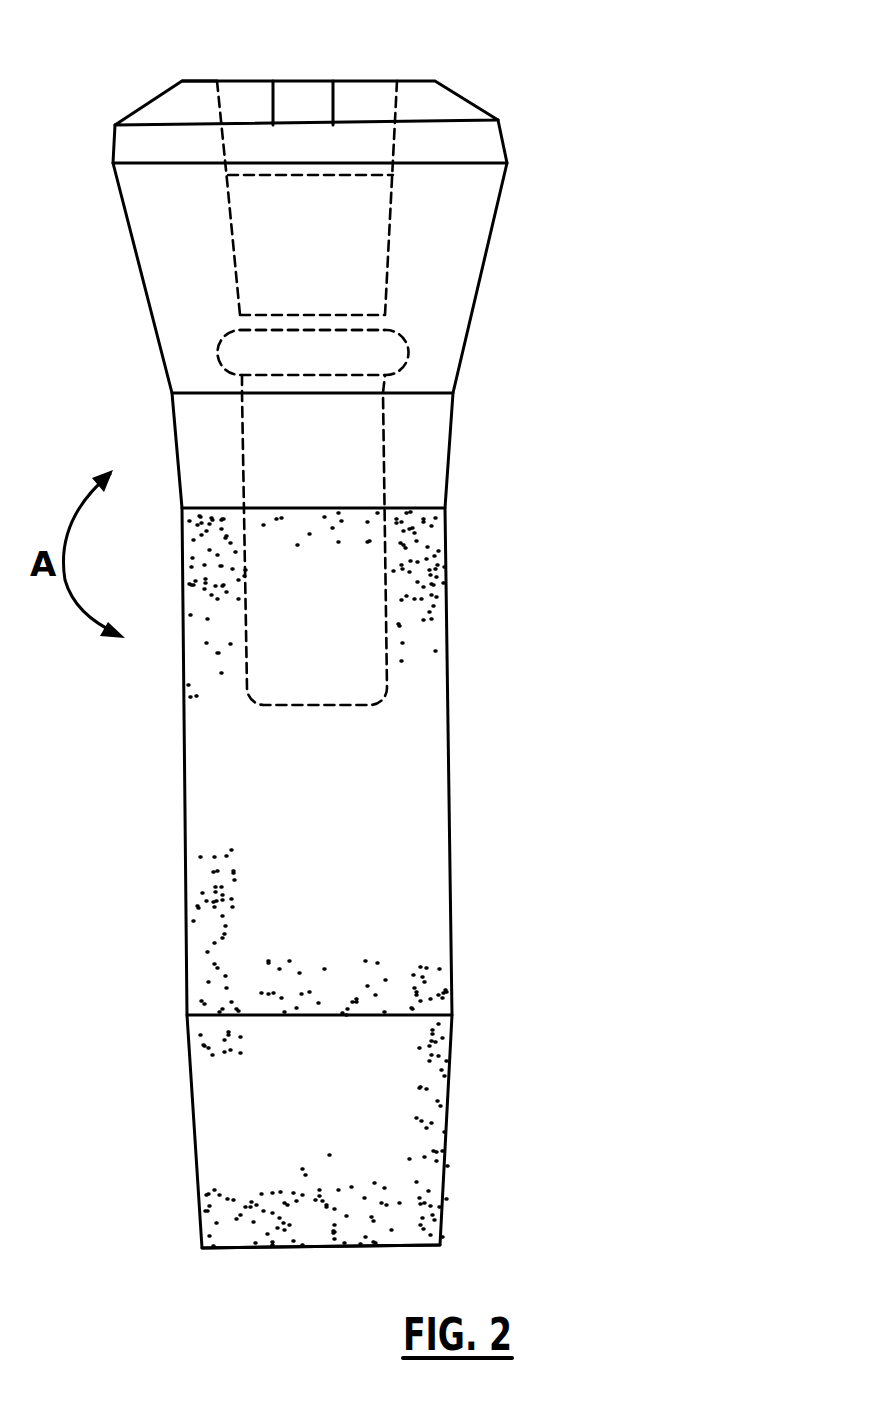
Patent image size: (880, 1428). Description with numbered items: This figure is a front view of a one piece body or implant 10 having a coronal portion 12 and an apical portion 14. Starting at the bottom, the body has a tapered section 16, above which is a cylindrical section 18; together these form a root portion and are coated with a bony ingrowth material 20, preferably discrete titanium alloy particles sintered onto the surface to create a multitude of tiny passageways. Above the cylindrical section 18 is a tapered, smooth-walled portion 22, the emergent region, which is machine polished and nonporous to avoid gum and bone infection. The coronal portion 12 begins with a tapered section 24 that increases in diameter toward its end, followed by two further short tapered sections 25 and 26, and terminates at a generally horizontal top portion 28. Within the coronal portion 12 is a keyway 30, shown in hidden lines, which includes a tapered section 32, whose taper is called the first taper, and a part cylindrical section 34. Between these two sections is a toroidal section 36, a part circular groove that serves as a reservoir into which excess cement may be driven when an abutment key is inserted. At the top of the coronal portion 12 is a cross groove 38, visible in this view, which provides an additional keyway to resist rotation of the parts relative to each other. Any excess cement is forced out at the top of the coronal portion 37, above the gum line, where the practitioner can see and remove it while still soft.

The one piece body 10 is at (530, 442).
The coronal portion 12 is at (543, 242).
The apical portion 14 is at (458, 1248).
The tapered section 16 is at (440, 1170).
The cylindrical section 18 is at (453, 902).
The bony ingrowth material 20 is at (190, 958).
The tapered smooth-walled portion 22 is at (449, 485).
The tapered section 24 is at (470, 333).
The tapered section 25 is at (507, 145).
The tapered section 26 is at (472, 100).
The top portion 28 is at (385, 80).
The keyway 30 is at (227, 208).
The tapered section 32 is at (345, 243).
The part cylindrical section 34 is at (343, 457).
The toroidal section 36 is at (218, 350).
The top of the coronal portion 37 is at (200, 80).
The cross groove 38 is at (310, 92).